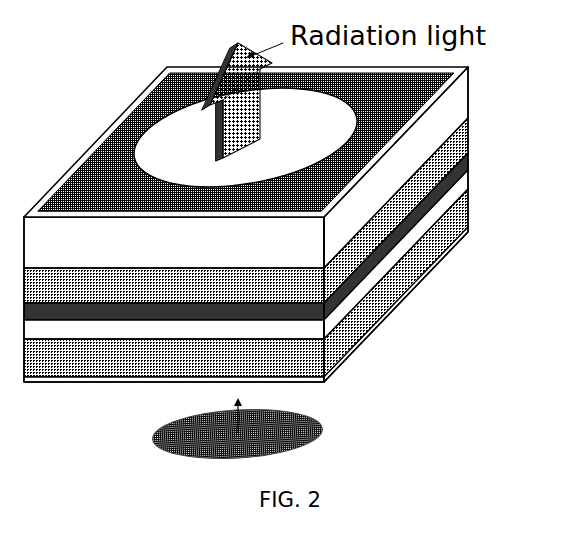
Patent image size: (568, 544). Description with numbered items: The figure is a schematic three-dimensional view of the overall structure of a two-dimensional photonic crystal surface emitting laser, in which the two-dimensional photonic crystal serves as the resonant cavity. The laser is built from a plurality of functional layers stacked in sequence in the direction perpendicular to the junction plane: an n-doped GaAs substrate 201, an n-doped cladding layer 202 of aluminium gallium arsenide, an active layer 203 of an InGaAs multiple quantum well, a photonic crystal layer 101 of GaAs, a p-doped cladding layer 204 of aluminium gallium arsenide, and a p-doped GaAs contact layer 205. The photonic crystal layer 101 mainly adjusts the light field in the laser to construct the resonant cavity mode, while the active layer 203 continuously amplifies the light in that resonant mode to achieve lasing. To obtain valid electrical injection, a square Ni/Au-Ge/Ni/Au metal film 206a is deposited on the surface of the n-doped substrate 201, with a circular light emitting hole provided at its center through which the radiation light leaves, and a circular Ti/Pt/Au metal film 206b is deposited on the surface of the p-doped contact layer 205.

The n-doped substrate 201 is at (451, 103).
The n-doped cladding layer 202 is at (456, 143).
The active layer 203 is at (469, 152).
The photonic crystal layer 101 is at (457, 187).
The p-doped cladding layer 204 is at (468, 222).
The p-doped contact layer 205 is at (72, 378).
The square Ni/Au-Ge/Ni/Au metal film 206a is at (122, 126).
The circular Ti/Pt/Au metal film 206b is at (307, 427).